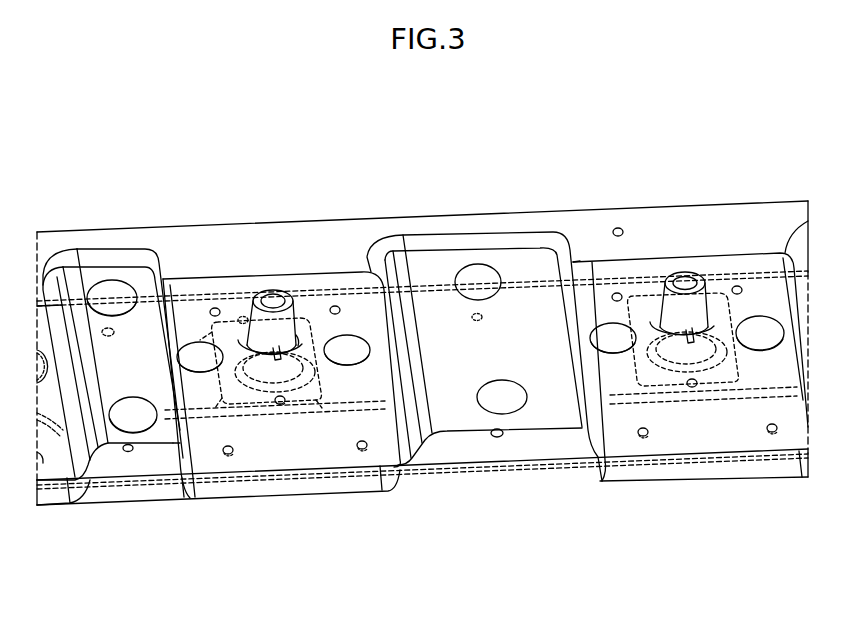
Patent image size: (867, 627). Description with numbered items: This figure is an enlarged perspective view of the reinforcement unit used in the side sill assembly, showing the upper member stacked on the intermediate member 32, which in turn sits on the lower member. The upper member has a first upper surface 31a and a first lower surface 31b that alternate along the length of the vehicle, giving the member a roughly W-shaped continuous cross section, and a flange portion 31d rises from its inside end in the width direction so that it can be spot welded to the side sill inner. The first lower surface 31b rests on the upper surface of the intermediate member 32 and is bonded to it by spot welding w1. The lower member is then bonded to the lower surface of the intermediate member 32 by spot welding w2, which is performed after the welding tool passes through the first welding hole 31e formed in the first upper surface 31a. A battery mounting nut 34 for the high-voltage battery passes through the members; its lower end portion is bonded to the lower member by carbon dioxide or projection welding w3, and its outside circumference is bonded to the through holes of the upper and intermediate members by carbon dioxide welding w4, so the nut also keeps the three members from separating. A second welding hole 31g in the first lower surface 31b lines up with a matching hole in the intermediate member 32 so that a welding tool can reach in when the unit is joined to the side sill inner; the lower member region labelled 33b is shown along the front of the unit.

The intermediate member 32 is at (548, 442).
The front rail of frame 33b is at (292, 490).
The first upper surface 31a is at (470, 415).
The first lower surface 31b is at (208, 462).
The flange portion 31d is at (674, 230).
The first welding hole 31e is at (476, 266).
The second welding hole 31g is at (592, 262).
The battery mounting nut 34 is at (270, 288).
The spot welding of first lower surface to intermediate member w1 is at (215, 308).
The spot welding of lower member to intermediate member w2 is at (480, 317).
The nut lower end welding w3 is at (243, 316).
The nut circumference welding w4 is at (299, 338).